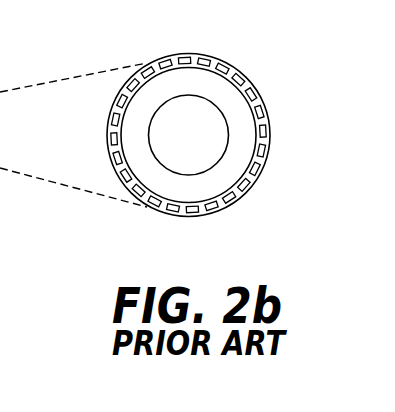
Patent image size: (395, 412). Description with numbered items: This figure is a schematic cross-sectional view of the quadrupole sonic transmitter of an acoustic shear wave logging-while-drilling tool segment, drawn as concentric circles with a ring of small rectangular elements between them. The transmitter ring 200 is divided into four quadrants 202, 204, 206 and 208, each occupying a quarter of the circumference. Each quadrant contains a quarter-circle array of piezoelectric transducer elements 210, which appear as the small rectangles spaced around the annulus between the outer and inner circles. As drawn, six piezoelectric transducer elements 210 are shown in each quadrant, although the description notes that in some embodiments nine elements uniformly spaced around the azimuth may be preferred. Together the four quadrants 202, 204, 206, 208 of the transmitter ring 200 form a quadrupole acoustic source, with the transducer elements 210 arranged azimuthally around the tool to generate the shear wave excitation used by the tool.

The transmitter ring 200 is at (277, 146).
The quadrant 202 is at (202, 58).
The quadrant 204 is at (262, 178).
The quadrant 206 is at (198, 217).
The quadrant 208 is at (110, 144).
The piezoelectric transducer elements 210 is at (263, 115).